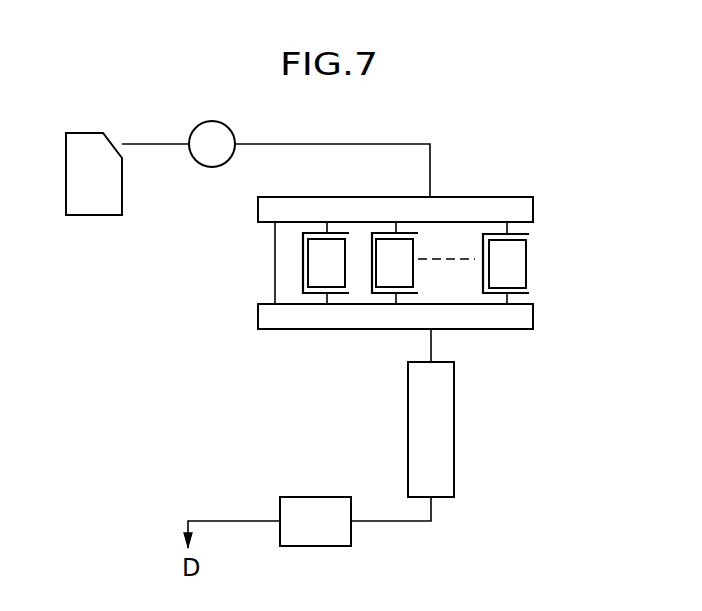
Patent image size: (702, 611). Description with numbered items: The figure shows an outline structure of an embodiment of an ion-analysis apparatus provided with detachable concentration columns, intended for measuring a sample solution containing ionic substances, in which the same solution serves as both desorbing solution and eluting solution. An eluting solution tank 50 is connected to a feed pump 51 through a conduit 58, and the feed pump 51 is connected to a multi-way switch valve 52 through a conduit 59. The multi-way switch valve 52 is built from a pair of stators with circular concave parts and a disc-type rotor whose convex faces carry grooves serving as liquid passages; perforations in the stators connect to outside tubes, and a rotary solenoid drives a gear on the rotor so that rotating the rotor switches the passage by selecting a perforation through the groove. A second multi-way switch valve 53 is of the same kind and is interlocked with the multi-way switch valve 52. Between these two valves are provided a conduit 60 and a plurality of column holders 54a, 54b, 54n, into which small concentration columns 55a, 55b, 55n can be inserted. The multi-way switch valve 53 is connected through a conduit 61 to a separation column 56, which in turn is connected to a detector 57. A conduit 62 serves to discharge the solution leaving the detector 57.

The eluting solution tank 50 is at (93, 215).
The feed pump 51 is at (216, 167).
The multi-way switch valve 52 is at (507, 197).
The multi-way switch valve 53 is at (513, 329).
The column holder 54a is at (303, 254).
The column holder 54b is at (385, 295).
The column holder 54n is at (523, 295).
The concentration column 55a is at (345, 270).
The concentration column 55b is at (415, 252).
The concentration column 55n is at (527, 266).
The separation column 56 is at (454, 437).
The detector 57 is at (318, 497).
The conduit 58 is at (147, 144).
The conduit 59 is at (313, 144).
The conduit 60 is at (275, 296).
The conduit 61 is at (432, 346).
The conduit 62 is at (250, 521).